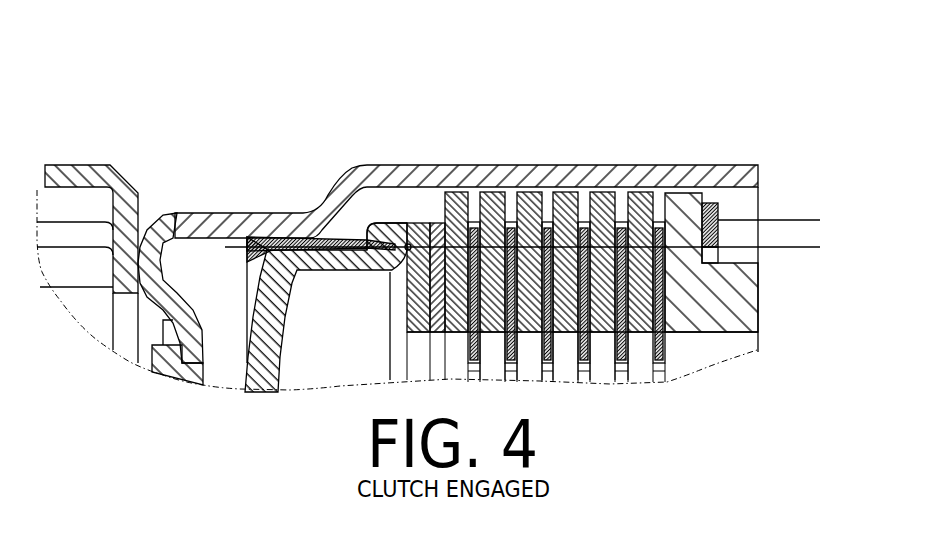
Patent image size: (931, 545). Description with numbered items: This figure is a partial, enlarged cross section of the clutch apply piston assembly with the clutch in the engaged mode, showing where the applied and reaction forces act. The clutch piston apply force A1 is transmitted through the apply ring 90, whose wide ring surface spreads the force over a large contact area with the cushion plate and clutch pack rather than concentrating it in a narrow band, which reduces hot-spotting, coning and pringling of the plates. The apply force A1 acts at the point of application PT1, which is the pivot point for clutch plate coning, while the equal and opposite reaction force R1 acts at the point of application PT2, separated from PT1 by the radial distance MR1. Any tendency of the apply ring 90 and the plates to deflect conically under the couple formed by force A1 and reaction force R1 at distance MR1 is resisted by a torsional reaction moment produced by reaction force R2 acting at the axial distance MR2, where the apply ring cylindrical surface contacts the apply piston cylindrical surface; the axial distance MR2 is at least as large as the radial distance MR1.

The apply ring 90 is at (396, 214).
The clutch piston apply force A1 is at (511, 246).
The reaction force R1 is at (805, 178).
The reaction force R2 is at (373, 258).
The radial distance MR1 is at (805, 260).
The axial distance MR2 is at (408, 123).
The point of application of clutch piston apply force PT1 is at (410, 249).
The point of application of reaction force PT2 is at (720, 219).